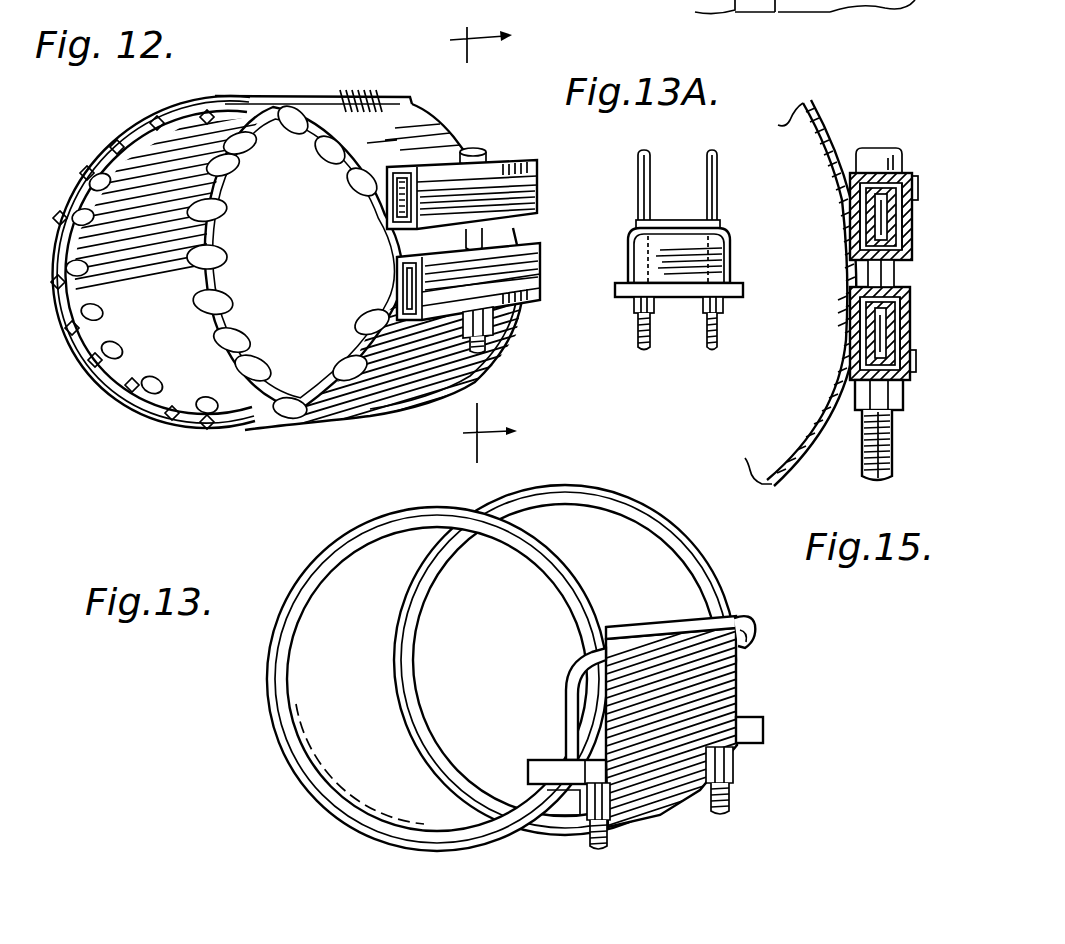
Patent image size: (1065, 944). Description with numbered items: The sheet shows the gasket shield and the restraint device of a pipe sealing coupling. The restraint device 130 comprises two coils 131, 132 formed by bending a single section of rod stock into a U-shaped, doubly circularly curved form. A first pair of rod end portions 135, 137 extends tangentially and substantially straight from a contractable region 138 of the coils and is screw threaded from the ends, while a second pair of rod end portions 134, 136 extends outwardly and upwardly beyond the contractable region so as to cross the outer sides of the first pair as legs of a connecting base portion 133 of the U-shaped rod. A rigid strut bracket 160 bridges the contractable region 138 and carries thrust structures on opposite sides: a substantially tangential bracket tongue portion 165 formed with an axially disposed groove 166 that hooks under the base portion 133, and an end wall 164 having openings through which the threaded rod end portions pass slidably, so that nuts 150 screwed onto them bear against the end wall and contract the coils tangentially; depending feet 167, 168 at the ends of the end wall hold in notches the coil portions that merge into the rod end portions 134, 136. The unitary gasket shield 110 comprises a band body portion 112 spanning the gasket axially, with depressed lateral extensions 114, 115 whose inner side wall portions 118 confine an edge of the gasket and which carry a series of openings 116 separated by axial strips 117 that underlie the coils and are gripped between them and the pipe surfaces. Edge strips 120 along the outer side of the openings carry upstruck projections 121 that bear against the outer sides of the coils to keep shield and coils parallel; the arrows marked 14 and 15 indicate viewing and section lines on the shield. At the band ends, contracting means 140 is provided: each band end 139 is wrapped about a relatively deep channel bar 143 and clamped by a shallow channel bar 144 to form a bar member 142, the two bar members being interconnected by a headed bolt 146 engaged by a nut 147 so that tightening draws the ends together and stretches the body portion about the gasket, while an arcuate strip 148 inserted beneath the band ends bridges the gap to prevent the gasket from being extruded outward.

In FIG. 12, the gasket shield 110 is at (362, 68).
In FIG. 12, the body portion 112 is at (307, 90).
In FIG. 15, the body portion 112 is at (820, 120).
In FIG. 12, the lateral extension 114 is at (238, 440).
In FIG. 12, the lateral extension 115 is at (327, 383).
In FIG. 12, the openings 116 is at (172, 122).
In FIG. 12, the axial strips 117 is at (97, 332).
In FIG. 12, the inner side wall portions 118 is at (250, 100).
In FIG. 12, the edge strips 120 is at (90, 170).
In FIG. 12, the upstruck projections 121 is at (60, 216).
In FIG. 12, the section line 14 is at (367, 109).
In FIG. 12, the section line 15 is at (496, 245).
In FIG. 13, the restraint device 130 is at (430, 492).
In FIG. 13A, the coil 131 is at (642, 152).
In FIG. 13, the coil 131 is at (268, 690).
In FIG. 13A, the coil 132 is at (707, 152).
In FIG. 13, the coil 132 is at (692, 562).
In FIG. 13A, the connecting base portion 133 is at (693, 226).
In FIG. 13, the connecting base portion 133 is at (680, 640).
In FIG. 13, the rod end portion 134 is at (752, 642).
In FIG. 13A, the rod end portion 135 is at (720, 337).
In FIG. 13, the rod end portion 135 is at (733, 810).
In FIG. 13, the rod end portion 136 is at (590, 680).
In FIG. 13A, the rod end portion 137 is at (649, 333).
In FIG. 13, the rod end portion 137 is at (607, 840).
In FIG. 13, the contractable region 138 is at (545, 699).
In FIG. 12, the band end 139 is at (537, 205).
In FIG. 15, the band end 139 is at (912, 242).
In FIG. 12, the contracting means 140 is at (546, 165).
In FIG. 15, the contracting means 140 is at (929, 168).
In FIG. 12, the bar member 142 is at (387, 232).
In FIG. 15, the bar member 142 is at (916, 226).
In FIG. 15, the channel bar 143 is at (855, 228).
In FIG. 12, the channel bar 144 is at (510, 163).
In FIG. 15, the channel bar 144 is at (845, 170).
In FIG. 12, the headed bolt 146 is at (467, 233).
In FIG. 15, the headed bolt 146 is at (873, 270).
In FIG. 12, the nut 147 is at (498, 318).
In FIG. 15, the nut 147 is at (902, 402).
In FIG. 15, the arcuate strip 148 is at (847, 307).
In FIG. 13A, the nuts 150 is at (725, 306).
In FIG. 13, the nuts 150 is at (737, 770).
In FIG. 13A, the strut bracket 160 is at (717, 250).
In FIG. 13, the strut bracket 160 is at (715, 721).
In FIG. 13, the end wall 164 is at (530, 770).
In FIG. 13A, the bracket tongue portion 165 is at (657, 217).
In FIG. 13, the bracket tongue portion 165 is at (647, 622).
In FIG. 13, the groove 166 is at (745, 612).
In FIG. 13, the foot 167 is at (550, 748).
In FIG. 13, the foot 168 is at (763, 725).